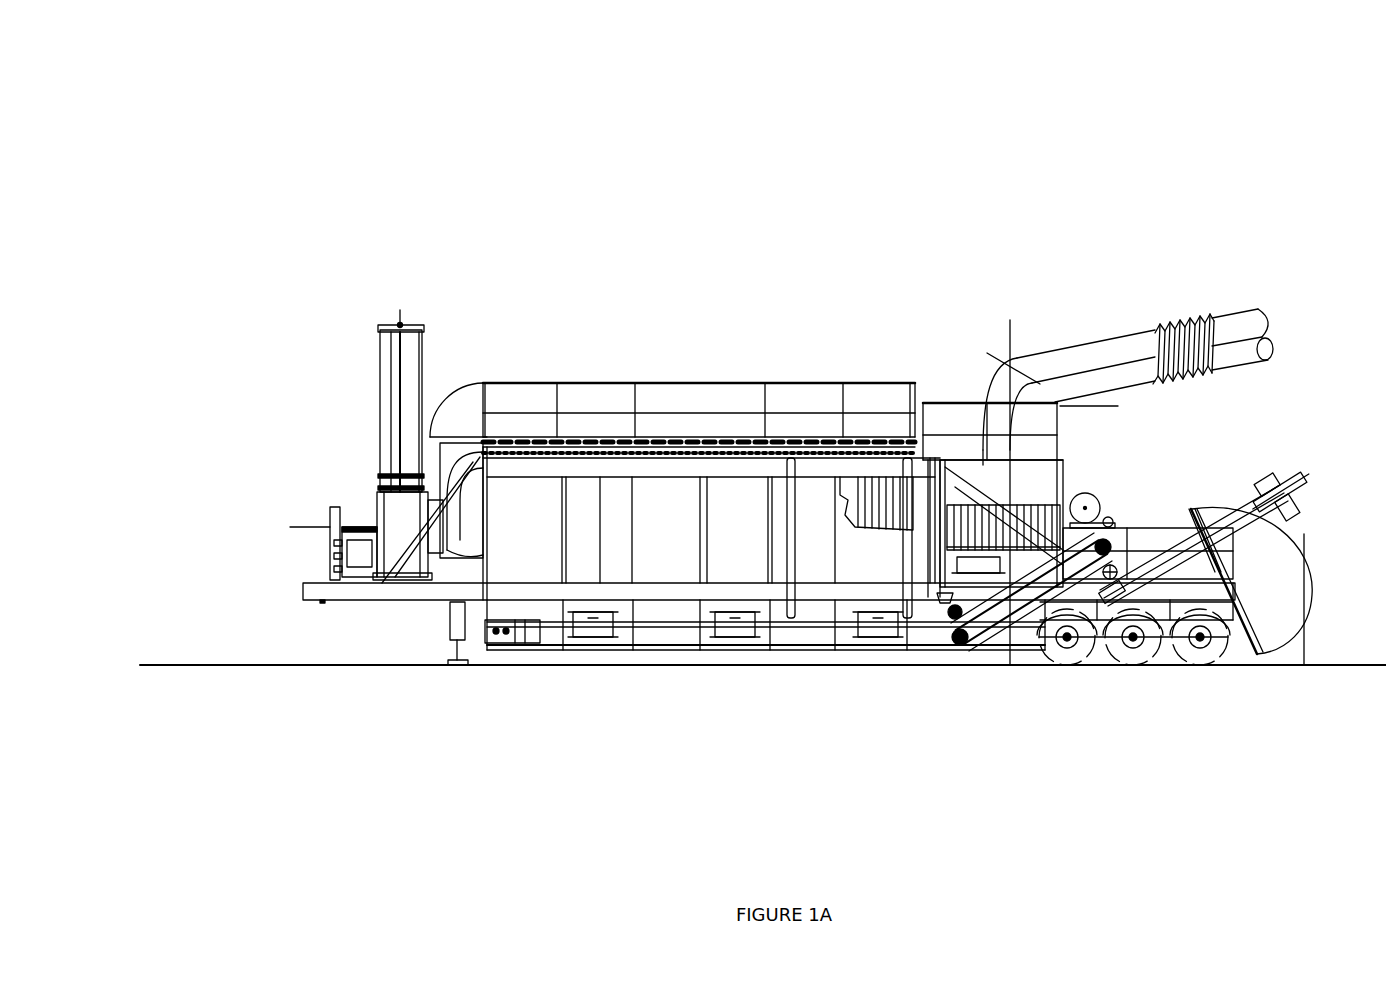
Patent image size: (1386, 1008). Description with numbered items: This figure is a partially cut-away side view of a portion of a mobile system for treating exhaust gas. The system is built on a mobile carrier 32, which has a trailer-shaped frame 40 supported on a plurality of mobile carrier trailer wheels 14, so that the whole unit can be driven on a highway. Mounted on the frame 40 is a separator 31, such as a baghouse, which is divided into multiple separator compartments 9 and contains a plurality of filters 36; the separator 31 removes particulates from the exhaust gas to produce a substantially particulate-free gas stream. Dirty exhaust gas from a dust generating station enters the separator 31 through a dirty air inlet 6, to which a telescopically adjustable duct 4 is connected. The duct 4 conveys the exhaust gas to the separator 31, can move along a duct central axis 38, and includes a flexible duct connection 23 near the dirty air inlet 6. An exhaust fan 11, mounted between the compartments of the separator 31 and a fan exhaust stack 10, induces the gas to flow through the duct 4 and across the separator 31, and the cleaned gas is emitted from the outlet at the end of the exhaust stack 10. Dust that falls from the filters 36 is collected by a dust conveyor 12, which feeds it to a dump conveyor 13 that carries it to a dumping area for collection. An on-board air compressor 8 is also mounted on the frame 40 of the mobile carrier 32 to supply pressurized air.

The mobile carrier 32 is at (775, 68).
The separator 31 is at (658, 393).
The filters 36 is at (845, 383).
The separator compartments 9 is at (563, 434).
The fan exhaust stack 10 is at (307, 445).
The exhaust fan 11 is at (246, 539).
The frame 40 is at (768, 624).
The dust conveyor 12 is at (765, 738).
The dirty air inlet 6 is at (1020, 427).
The duct central axis 38 is at (1142, 237).
The telescopically adjustable duct 4 is at (1216, 324).
The flexible duct connection 23 is at (1216, 271).
The air compressor 8 is at (1148, 509).
The mobile carrier trailer wheels 14 is at (1090, 718).
The dump conveyor 13 is at (1212, 554).